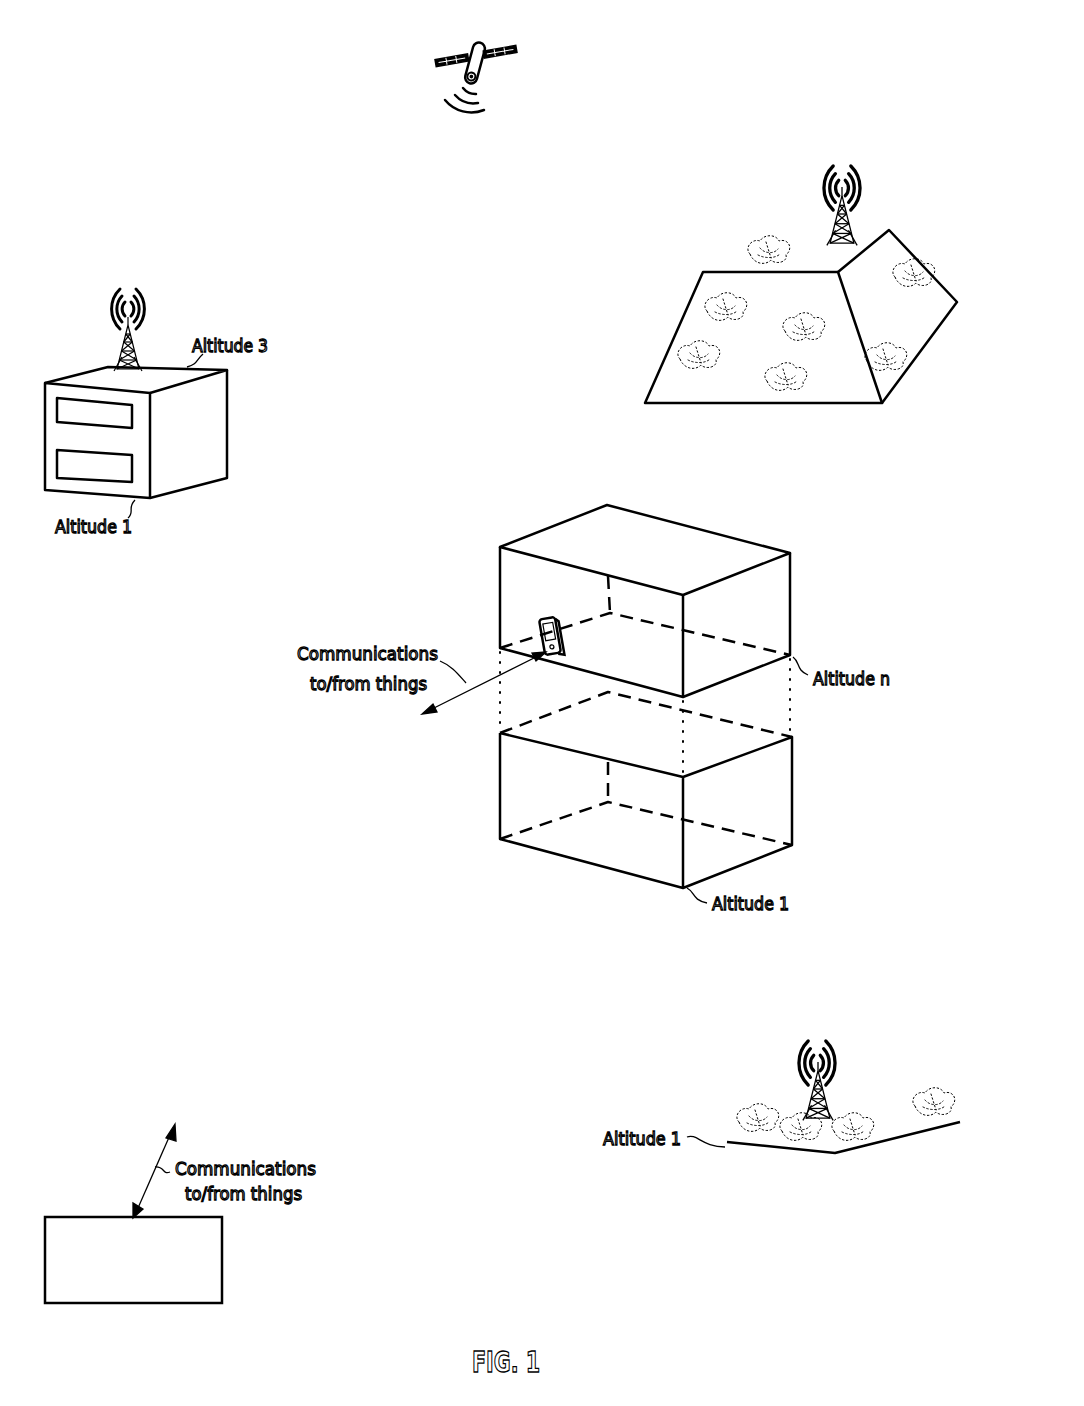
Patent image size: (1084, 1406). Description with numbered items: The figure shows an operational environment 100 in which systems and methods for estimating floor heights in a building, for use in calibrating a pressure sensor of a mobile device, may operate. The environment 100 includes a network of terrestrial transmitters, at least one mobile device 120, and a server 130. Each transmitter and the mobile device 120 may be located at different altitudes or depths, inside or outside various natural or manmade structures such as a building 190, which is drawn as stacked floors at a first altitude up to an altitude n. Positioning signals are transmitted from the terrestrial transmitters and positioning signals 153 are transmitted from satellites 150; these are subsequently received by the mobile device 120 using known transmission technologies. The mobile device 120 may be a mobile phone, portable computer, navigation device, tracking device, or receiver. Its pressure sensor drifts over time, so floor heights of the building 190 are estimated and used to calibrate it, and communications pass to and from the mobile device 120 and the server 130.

The operational environment 100 is at (92, 57).
The mobile device 120 is at (540, 617).
The server 130 is at (148, 1284).
The satellites 150 is at (484, 42).
The positioning signals 153 is at (490, 101).
The building 190 is at (585, 862).